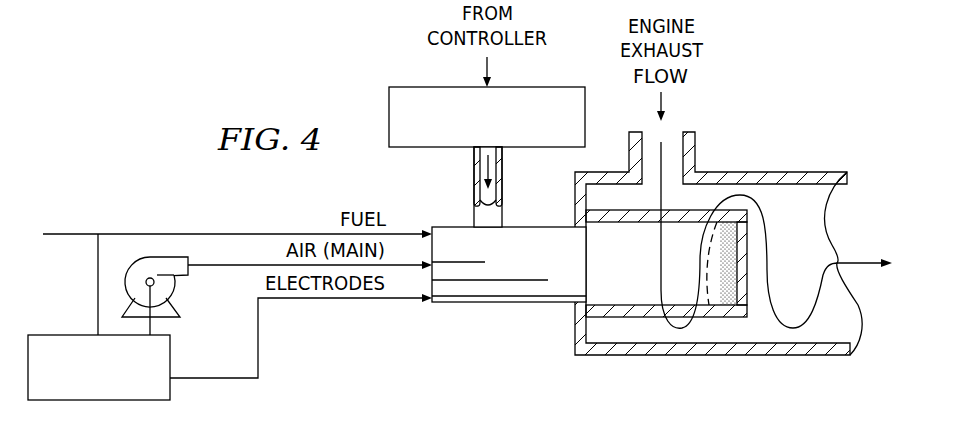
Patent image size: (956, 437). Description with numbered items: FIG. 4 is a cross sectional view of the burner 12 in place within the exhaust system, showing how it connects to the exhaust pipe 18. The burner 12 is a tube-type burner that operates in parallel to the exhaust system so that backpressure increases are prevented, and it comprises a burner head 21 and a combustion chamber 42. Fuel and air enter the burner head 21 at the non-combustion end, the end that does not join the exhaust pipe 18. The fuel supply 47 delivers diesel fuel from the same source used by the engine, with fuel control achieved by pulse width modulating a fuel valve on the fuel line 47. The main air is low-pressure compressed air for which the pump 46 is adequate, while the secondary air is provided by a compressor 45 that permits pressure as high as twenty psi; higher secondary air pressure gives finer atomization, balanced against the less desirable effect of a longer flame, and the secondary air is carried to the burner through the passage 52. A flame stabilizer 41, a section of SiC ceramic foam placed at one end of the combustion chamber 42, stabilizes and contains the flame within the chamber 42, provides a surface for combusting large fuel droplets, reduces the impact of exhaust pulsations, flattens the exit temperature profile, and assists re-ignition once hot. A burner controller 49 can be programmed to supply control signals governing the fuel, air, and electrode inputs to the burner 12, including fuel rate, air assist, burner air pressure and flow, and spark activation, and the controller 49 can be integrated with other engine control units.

The burner 12 is at (654, 256).
The exhaust pipe 18 is at (797, 172).
The burner head 21 is at (468, 303).
The flame stabilizer 41 is at (733, 278).
The combustion chamber 42 is at (747, 232).
The compressor 45 is at (410, 87).
The pump 46 is at (178, 292).
The fuel supply 47 is at (131, 233).
The burner controller 49 is at (58, 333).
The secondary air tube 52 is at (474, 185).